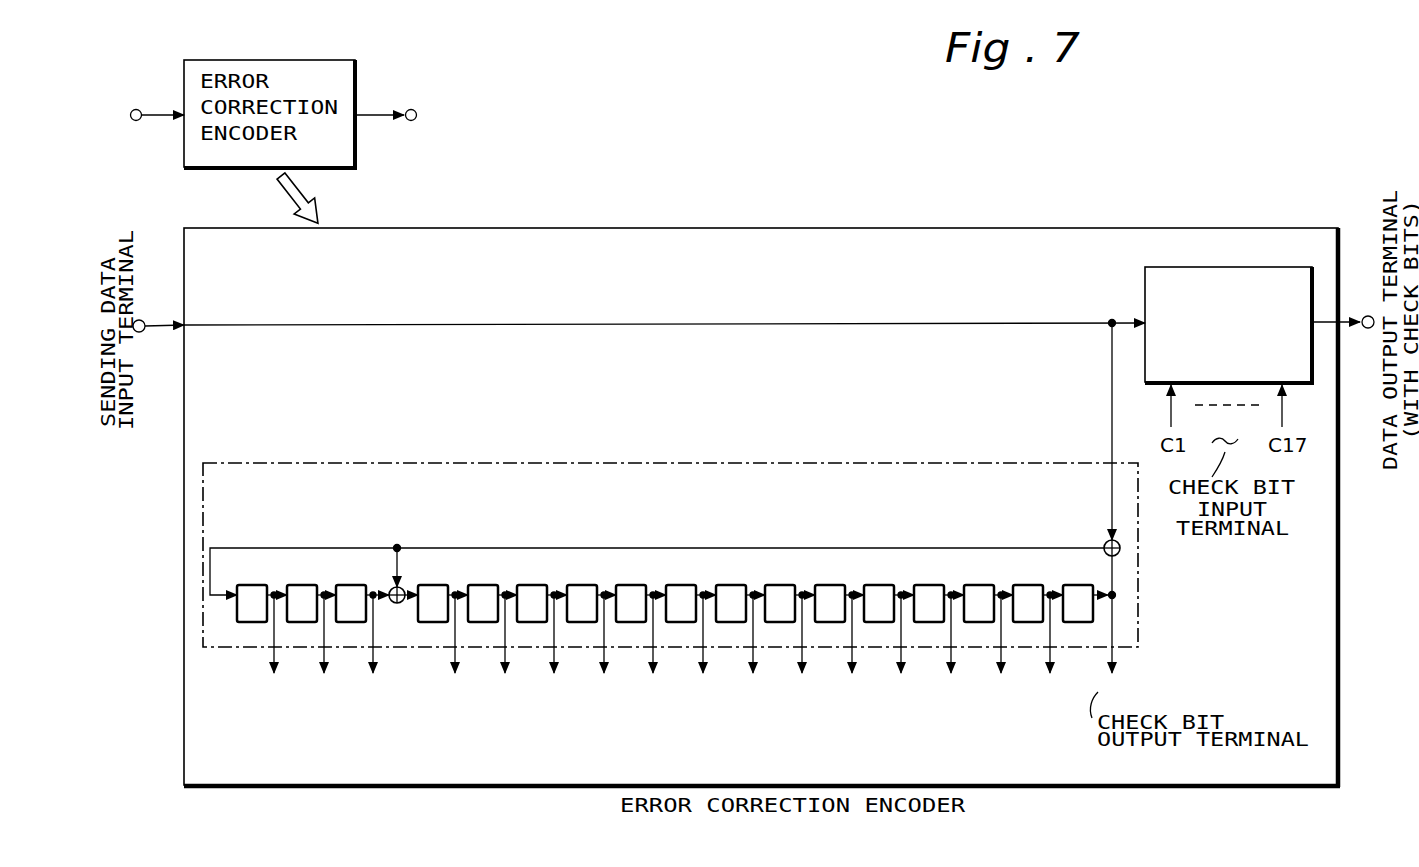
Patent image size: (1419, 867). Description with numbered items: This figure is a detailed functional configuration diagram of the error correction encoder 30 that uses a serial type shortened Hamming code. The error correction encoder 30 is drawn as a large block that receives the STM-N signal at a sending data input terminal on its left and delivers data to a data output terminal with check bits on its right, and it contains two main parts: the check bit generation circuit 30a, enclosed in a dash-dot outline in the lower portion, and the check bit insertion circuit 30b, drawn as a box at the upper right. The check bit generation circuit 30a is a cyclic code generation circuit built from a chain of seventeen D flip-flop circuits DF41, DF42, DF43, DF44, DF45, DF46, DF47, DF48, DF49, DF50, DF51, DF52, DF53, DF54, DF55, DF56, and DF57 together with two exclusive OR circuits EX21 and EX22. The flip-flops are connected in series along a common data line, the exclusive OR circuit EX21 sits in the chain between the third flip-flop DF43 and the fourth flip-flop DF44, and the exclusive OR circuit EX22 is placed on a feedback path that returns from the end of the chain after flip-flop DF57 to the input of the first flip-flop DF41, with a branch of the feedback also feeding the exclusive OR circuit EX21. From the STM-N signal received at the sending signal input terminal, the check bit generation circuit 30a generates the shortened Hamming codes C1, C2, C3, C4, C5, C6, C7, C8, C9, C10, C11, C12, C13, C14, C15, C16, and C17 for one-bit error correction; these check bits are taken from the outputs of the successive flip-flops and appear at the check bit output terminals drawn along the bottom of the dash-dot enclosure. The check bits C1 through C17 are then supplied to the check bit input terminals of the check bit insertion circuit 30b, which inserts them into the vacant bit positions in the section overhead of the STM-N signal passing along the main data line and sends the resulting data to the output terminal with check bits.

The error correction encoder 30 is at (761, 209).
The check bit generation circuit 30a is at (222, 462).
The check bit insertion circuit 30b is at (1145, 285).
The D flip-flop circuit DF41 is at (251, 585).
The D flip-flop circuit DF42 is at (301, 585).
The D flip-flop circuit DF43 is at (350, 585).
The D flip-flop circuit DF44 is at (432, 585).
The D flip-flop circuit DF45 is at (482, 585).
The D flip-flop circuit DF46 is at (531, 585).
The D flip-flop circuit DF47 is at (581, 585).
The D flip-flop circuit DF48 is at (630, 585).
The D flip-flop circuit DF49 is at (680, 585).
The D flip-flop circuit DF50 is at (730, 585).
The D flip-flop circuit DF51 is at (779, 585).
The D flip-flop circuit DF52 is at (829, 585).
The D flip-flop circuit DF53 is at (878, 585).
The D flip-flop circuit DF54 is at (928, 585).
The D flip-flop circuit DF55 is at (978, 585).
The D flip-flop circuit DF56 is at (1027, 585).
The D flip-flop circuit DF57 is at (1094, 608).
The exclusive OR circuit EX21 is at (400, 604).
The exclusive OR circuit EX22 is at (1121, 548).
The check bit C1 is at (274, 650).
The check bit C2 is at (324, 650).
The check bit C3 is at (373, 650).
The check bit C4 is at (455, 650).
The check bit C5 is at (505, 650).
The check bit C6 is at (554, 650).
The check bit C7 is at (604, 650).
The check bit C8 is at (653, 650).
The check bit C9 is at (703, 650).
The check bit C10 is at (752, 650).
The check bit C11 is at (801, 650).
The check bit C12 is at (851, 650).
The check bit C13 is at (900, 650).
The check bit C14 is at (950, 650).
The check bit C15 is at (1000, 650).
The check bit C16 is at (1049, 650).
The check bit C17 is at (1111, 693).